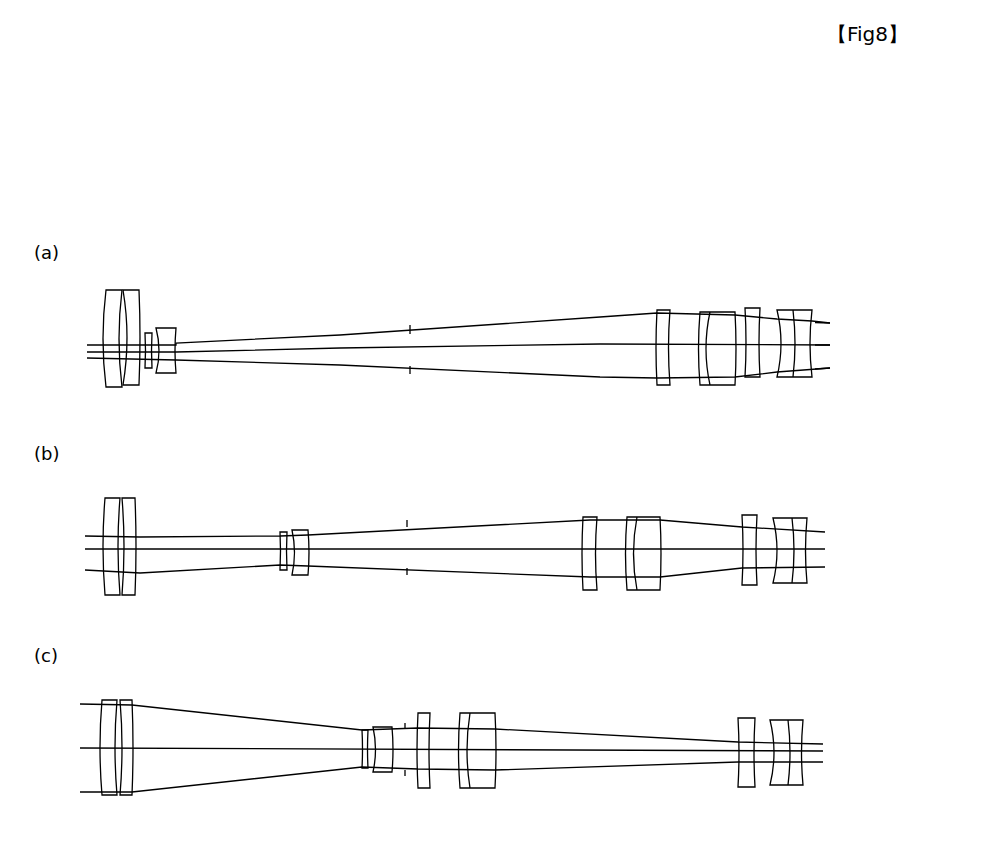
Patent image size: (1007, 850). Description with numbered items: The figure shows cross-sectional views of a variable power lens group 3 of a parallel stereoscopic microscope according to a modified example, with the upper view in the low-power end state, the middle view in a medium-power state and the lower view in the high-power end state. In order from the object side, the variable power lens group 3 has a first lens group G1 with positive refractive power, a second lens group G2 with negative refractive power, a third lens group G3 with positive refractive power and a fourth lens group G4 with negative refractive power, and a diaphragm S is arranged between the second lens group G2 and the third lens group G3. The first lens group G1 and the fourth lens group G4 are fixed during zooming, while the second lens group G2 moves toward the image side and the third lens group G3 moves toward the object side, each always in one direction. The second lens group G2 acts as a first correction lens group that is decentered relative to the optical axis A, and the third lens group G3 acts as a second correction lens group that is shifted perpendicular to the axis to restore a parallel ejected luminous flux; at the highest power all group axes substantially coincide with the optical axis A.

The variable power lens group 3 is at (650, 215).
The first lens group G1 is at (140, 280).
The second lens group G2 is at (180, 280).
The third lens group G3 is at (735, 280).
The fourth lens group G4 is at (813, 280).
The diaphragm S is at (410, 326).
The optical axis A is at (822, 348).